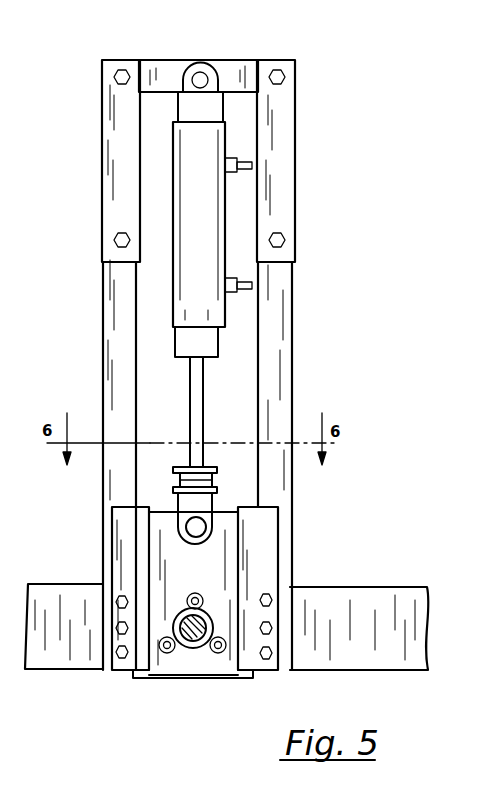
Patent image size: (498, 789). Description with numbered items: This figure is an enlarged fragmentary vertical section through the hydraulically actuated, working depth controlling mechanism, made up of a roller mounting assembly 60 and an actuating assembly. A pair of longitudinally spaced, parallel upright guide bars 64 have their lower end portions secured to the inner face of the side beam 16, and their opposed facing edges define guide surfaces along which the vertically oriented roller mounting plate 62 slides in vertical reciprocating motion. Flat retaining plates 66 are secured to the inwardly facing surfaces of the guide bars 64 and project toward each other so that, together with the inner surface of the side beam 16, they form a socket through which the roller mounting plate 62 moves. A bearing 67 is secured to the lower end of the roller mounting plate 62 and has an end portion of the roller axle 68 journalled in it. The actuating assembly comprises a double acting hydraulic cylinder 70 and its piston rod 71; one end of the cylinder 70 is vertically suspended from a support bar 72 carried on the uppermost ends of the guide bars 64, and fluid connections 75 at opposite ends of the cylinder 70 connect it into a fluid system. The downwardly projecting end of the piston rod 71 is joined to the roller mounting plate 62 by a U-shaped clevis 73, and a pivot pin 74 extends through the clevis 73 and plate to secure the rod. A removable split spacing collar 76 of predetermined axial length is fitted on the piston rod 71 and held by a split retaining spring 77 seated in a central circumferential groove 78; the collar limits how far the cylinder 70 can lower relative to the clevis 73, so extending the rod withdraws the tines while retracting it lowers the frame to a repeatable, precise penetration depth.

The side beam 16 is at (362, 590).
The roller mounting assembly 60 is at (120, 678).
The roller mounting plate 62 is at (230, 622).
The guide bars 64 is at (120, 117).
The retaining plates 66 is at (125, 585).
The bearing 67 is at (200, 646).
The roller axle 68 is at (188, 640).
The cylinder 70 is at (190, 143).
The piston rod 71 is at (197, 368).
The support bar 72 is at (235, 72).
The U-shaped clevis 73 is at (190, 541).
The pivot pin 74 is at (200, 535).
The fluid connections 75 is at (252, 285).
The spacing collar 76 is at (178, 467).
The split retaining spring 77 is at (212, 480).
The central circumferential groove 78 is at (217, 478).